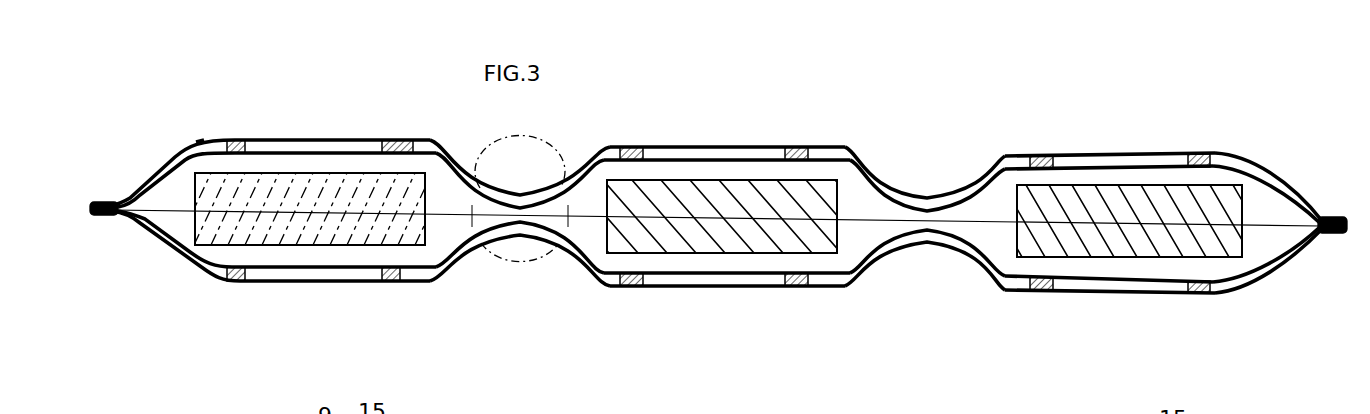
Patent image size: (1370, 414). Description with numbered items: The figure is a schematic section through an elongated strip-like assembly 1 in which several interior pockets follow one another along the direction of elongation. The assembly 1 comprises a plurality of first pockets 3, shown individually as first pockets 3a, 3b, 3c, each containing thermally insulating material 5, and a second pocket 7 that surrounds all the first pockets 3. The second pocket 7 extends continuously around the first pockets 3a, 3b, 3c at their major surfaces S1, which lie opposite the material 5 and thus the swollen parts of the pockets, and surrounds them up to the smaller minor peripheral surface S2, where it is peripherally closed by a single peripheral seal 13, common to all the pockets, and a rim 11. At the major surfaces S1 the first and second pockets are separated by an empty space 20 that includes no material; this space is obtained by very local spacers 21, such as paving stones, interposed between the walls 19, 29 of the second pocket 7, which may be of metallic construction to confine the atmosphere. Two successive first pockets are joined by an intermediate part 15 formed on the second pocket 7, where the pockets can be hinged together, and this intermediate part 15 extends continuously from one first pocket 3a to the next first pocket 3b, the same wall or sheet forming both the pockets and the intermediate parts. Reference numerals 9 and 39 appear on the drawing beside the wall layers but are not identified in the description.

The assembly 1 is at (714, 126).
The first pockets 3 is at (432, 145).
The first pocket 3a is at (388, 143).
The first pocket 3b is at (660, 147).
The first pocket 3c is at (1092, 155).
The thermally insulating material 5 is at (308, 230).
The second pocket 7 is at (277, 132).
The inner wall 9 is at (350, 152).
The rim 11 is at (108, 213).
The peripheral seal 13 is at (100, 197).
The intermediate part 15 is at (478, 167).
The wall 19 is at (202, 140).
The empty space 20 is at (300, 273).
The spacers 21 is at (230, 138).
The wall 29 is at (210, 282).
The inner lower layer 39 is at (258, 270).
The major surfaces S1 is at (163, 63).
The minor peripheral surface S2 is at (75, 105).